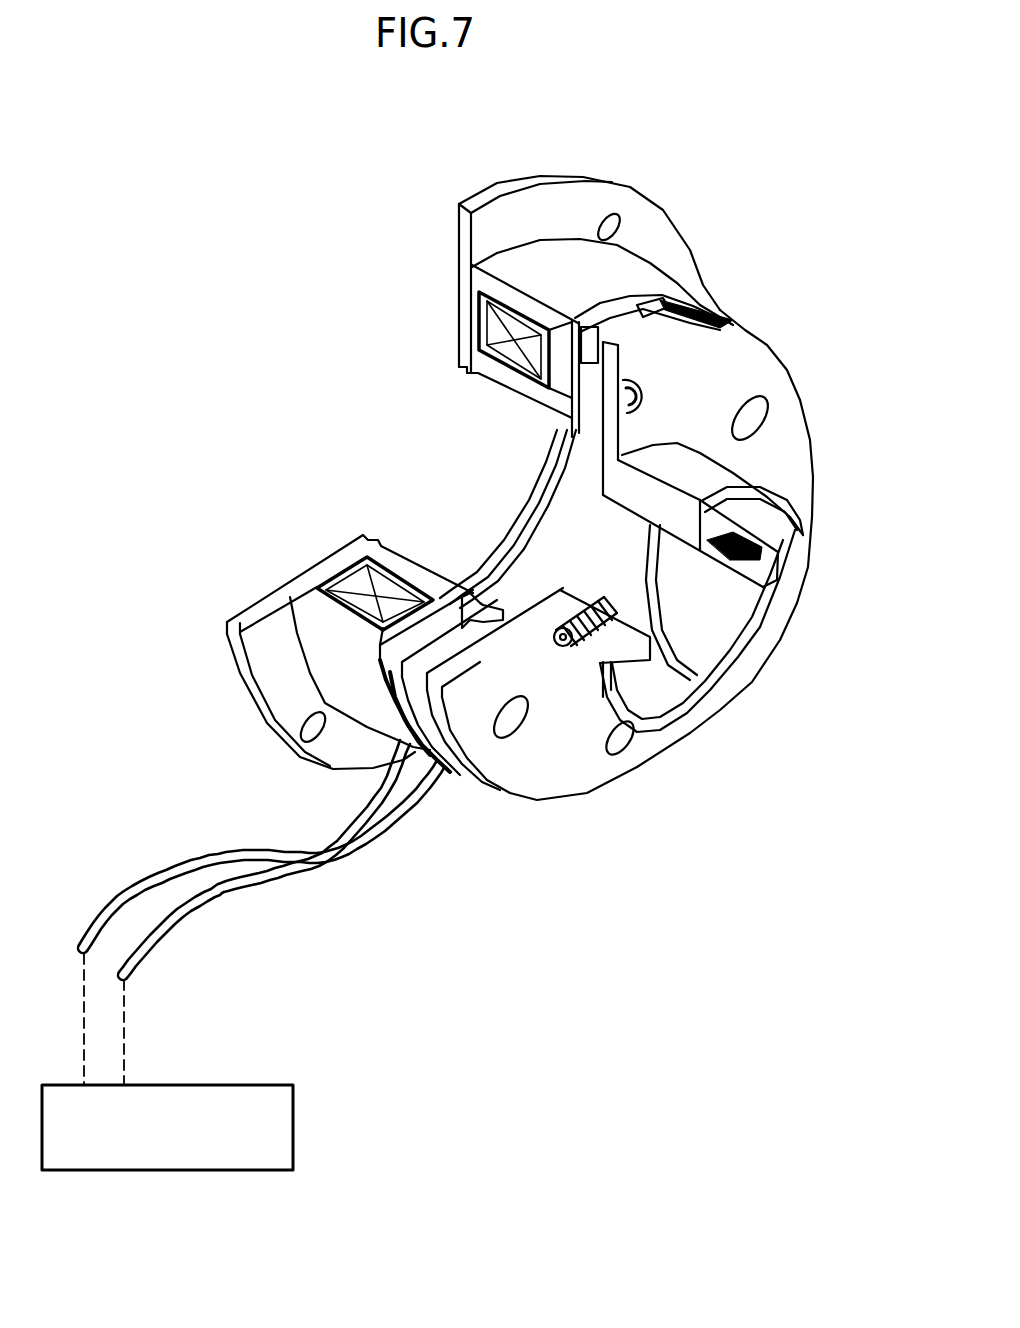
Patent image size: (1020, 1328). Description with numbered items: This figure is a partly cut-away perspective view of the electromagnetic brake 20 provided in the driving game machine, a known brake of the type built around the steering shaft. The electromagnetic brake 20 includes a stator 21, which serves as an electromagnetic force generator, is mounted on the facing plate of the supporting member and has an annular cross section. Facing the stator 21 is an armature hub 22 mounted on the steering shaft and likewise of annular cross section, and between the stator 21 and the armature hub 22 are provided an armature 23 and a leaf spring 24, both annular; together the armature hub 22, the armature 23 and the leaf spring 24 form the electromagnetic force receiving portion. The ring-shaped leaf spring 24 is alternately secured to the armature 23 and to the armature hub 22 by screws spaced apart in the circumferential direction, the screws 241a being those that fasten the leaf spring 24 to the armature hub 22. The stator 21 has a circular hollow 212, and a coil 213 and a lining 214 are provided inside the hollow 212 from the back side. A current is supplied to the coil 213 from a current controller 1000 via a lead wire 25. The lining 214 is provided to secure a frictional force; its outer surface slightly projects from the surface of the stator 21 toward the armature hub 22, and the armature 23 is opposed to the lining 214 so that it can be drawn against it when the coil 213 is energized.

The electromagnetic brake 20 is at (633, 172).
The stator 21 is at (512, 220).
The armature hub 22 is at (777, 538).
The armature 23 is at (617, 320).
The leaf spring 24 is at (618, 395).
The screw 241a is at (640, 413).
The circular hollow 212 is at (478, 308).
The coil 213 is at (493, 337).
The lining 214 is at (455, 600).
The lead wire 25 is at (403, 822).
The current controller 1000 is at (294, 1122).